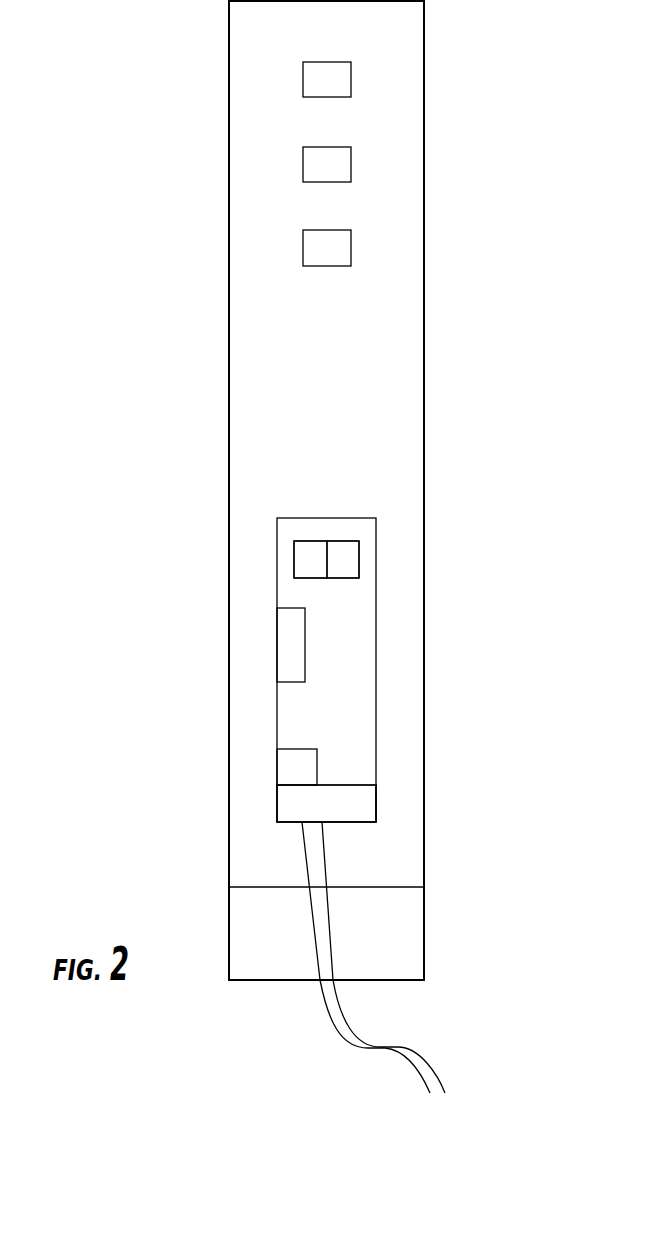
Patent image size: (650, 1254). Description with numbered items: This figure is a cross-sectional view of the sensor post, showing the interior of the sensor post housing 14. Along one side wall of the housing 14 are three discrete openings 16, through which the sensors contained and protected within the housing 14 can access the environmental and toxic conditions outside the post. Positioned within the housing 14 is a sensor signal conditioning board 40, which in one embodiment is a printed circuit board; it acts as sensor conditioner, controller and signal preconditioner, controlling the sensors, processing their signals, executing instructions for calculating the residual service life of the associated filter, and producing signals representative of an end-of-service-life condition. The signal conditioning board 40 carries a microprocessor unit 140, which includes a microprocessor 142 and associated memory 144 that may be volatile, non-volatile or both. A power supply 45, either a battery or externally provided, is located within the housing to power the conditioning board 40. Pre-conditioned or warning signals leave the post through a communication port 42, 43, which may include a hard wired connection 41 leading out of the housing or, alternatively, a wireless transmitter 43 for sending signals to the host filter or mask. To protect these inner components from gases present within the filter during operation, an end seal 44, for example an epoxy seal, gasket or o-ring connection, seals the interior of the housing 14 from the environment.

The housing 14 is at (393, 371).
The discrete openings 16 is at (338, 80).
The sensor signal conditioning board 40 is at (376, 588).
The hard wired connection 41 is at (438, 1072).
The communication port 42 is at (360, 803).
The wireless transmitter 43 is at (326, 803).
The end seal 44 is at (424, 887).
The power supply 45 is at (288, 638).
The microprocessor unit 140 is at (289, 543).
The microprocessor 142 is at (302, 560).
The memory 144 is at (338, 565).